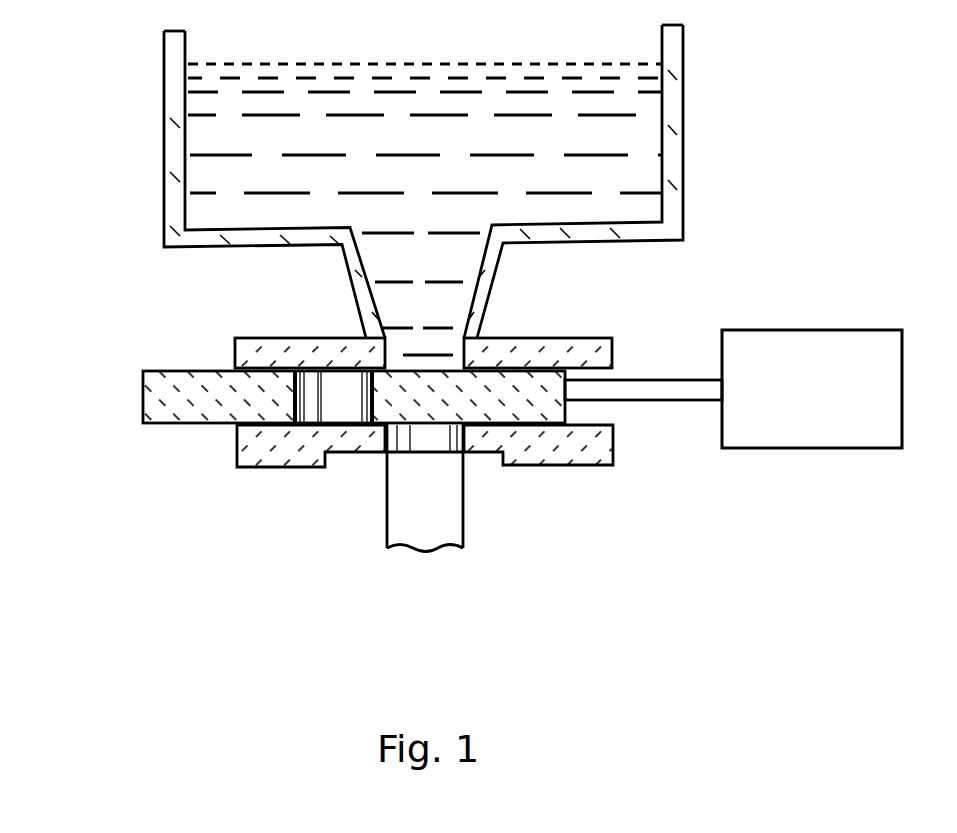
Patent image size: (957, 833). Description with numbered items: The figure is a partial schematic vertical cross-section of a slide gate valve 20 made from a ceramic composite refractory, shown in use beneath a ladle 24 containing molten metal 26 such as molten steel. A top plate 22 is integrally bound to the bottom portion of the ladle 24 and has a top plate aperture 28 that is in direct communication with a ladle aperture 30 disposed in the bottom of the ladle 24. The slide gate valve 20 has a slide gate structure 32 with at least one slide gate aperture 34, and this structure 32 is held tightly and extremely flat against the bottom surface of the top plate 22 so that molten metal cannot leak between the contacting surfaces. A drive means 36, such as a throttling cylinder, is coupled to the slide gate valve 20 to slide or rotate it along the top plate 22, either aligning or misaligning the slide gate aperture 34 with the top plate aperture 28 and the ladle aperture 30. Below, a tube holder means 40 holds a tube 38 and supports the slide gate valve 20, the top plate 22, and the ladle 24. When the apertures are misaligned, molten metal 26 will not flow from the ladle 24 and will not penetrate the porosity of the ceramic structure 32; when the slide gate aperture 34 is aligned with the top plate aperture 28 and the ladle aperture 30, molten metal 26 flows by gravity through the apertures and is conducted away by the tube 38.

The slide gate valve 20 is at (210, 432).
The top plate 22 is at (582, 338).
The ladle 24 is at (155, 112).
The molten metal 26 is at (586, 104).
The top plate aperture 28 is at (425, 347).
The ladle aperture 30 is at (453, 270).
The slide gate structure 32 is at (160, 403).
The slide gate aperture 34 is at (340, 400).
The drive means 36 is at (803, 365).
The tube 38 is at (430, 535).
The tube holder means 40 is at (579, 474).